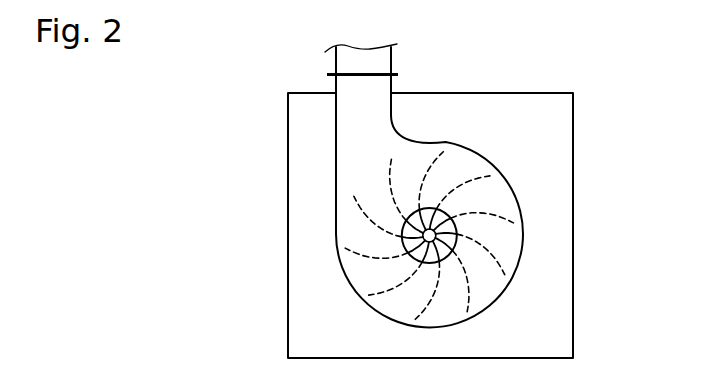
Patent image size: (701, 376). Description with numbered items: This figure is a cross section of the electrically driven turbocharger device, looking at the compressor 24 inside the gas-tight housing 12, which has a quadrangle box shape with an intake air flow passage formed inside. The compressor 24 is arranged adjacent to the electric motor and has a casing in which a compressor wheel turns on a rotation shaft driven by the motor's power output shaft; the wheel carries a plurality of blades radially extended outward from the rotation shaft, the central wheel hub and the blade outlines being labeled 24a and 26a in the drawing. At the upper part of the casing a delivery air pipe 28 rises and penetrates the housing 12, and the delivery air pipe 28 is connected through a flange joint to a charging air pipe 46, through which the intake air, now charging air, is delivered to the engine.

The gas-tight housing 12 is at (482, 93).
The delivery air pipe 28 is at (335, 92).
The charging air pipe 46 is at (394, 57).
The compressor 24 is at (478, 153).
The impeller hub 24a is at (446, 218).
The impeller blades 26a is at (495, 256).